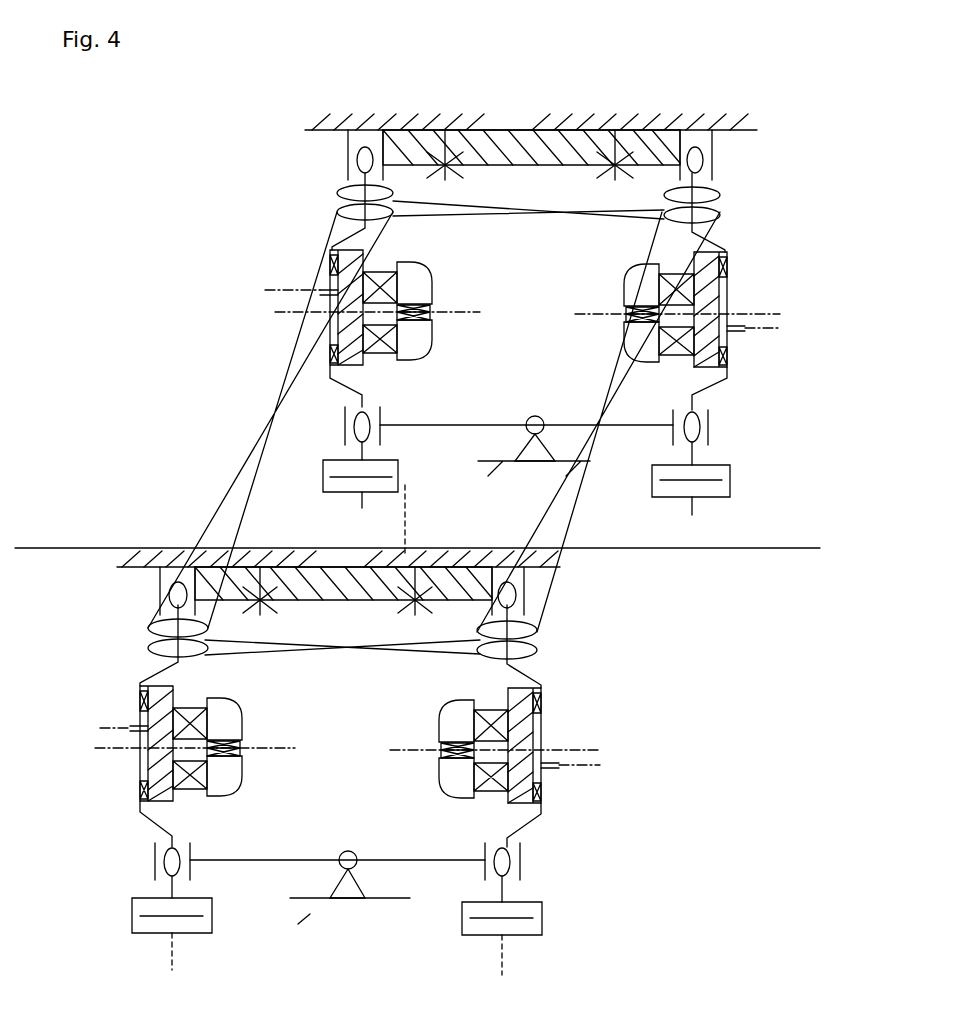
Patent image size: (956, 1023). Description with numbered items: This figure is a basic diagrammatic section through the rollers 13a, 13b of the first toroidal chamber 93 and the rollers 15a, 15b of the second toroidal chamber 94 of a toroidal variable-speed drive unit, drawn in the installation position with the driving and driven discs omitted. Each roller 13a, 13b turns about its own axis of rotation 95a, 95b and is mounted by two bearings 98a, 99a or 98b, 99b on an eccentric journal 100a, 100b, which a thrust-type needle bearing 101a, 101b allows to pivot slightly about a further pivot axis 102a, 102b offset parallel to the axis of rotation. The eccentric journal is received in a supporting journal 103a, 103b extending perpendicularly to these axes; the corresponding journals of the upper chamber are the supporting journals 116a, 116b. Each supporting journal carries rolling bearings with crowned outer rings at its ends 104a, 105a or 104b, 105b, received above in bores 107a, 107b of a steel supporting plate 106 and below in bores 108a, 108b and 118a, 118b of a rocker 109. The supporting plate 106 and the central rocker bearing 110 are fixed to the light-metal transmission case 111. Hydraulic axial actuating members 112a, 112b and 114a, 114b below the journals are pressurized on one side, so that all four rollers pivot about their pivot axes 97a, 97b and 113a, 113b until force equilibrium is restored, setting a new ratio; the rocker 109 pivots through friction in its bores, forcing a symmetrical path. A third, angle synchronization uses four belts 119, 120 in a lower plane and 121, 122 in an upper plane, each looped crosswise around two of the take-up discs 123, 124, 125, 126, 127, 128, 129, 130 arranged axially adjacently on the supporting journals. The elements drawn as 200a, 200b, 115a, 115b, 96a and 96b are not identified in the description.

The light-metal transmission case 111 is at (527, 117).
The steel supporting plate 106 is at (437, 372).
The take-up disc 125 is at (350, 196).
The take-up disc 126 is at (347, 213).
The take-up disc 124 is at (703, 200).
The take-up disc 123 is at (720, 213).
The belt 120 is at (447, 223).
The belt 122 is at (283, 358).
The belt 121 is at (610, 377).
The second toroidal chamber 94 is at (497, 587).
The first toroidal chamber 93 is at (355, 747).
The roller 15b is at (381, 301).
The roller 15a is at (675, 329).
The stator of motor 15b 200b is at (357, 285).
The stator of motor 15a 200a is at (703, 347).
The stator shaft of motor 15b 115b is at (272, 288).
The stator shaft of motor 15a 115a is at (780, 330).
The rotor hub of motor 15b 96b is at (465, 310).
The rotor hub of motor 15a 96a is at (768, 314).
The supporting journal 116b is at (357, 380).
The supporting journal 116a is at (697, 392).
The hydraulic axial actuating member 114b is at (312, 450).
The hydraulic axial actuating member 114a is at (709, 532).
The pivot axis 113b is at (362, 508).
The pivot axis 113a is at (692, 513).
The rocker 109 is at (447, 445).
The central rocker bearing 110 is at (355, 898).
The bore of supporting plate 107b is at (163, 577).
The bore of supporting plate 107a is at (493, 562).
The end of supporting journal 105b is at (163, 597).
The end of supporting journal 105a is at (543, 616).
The take-up disc 127 is at (160, 623).
The supporting journal 103b is at (160, 672).
The take-up disc 130 is at (465, 623).
The thrust-type needle bearing 101a is at (540, 698).
The thrust-type needle bearing 101b is at (143, 700).
The belt 119 is at (257, 641).
The take-up disc 128 is at (177, 650).
The take-up disc 129 is at (497, 655).
The roller 13b is at (199, 753).
The roller 13a is at (502, 758).
The eccentric journal 100b is at (160, 780).
The eccentric journal 100a is at (512, 805).
The axis of rotation 95b is at (140, 708).
The axis of rotation 95a is at (575, 758).
The further pivot axis 102b is at (100, 748).
The further pivot axis 102a is at (580, 766).
The bearing 99b is at (195, 708).
The bearing 99a is at (490, 710).
The bearing 98b is at (237, 745).
The bearing 98a is at (437, 745).
The bore of rocker 108b is at (153, 850).
The bore of rocker 108a is at (517, 876).
The supporting journal 103a is at (520, 832).
The bore of rocker 118b is at (188, 848).
The bore of rocker 118a is at (483, 841).
The end of supporting journal 104b is at (182, 864).
The end of supporting journal 104a is at (518, 858).
The hydraulic axial actuating member 112b is at (121, 891).
The hydraulic axial actuating member 112a is at (570, 918).
The pivot axis 97b is at (173, 964).
The pivot axis 97a is at (503, 968).